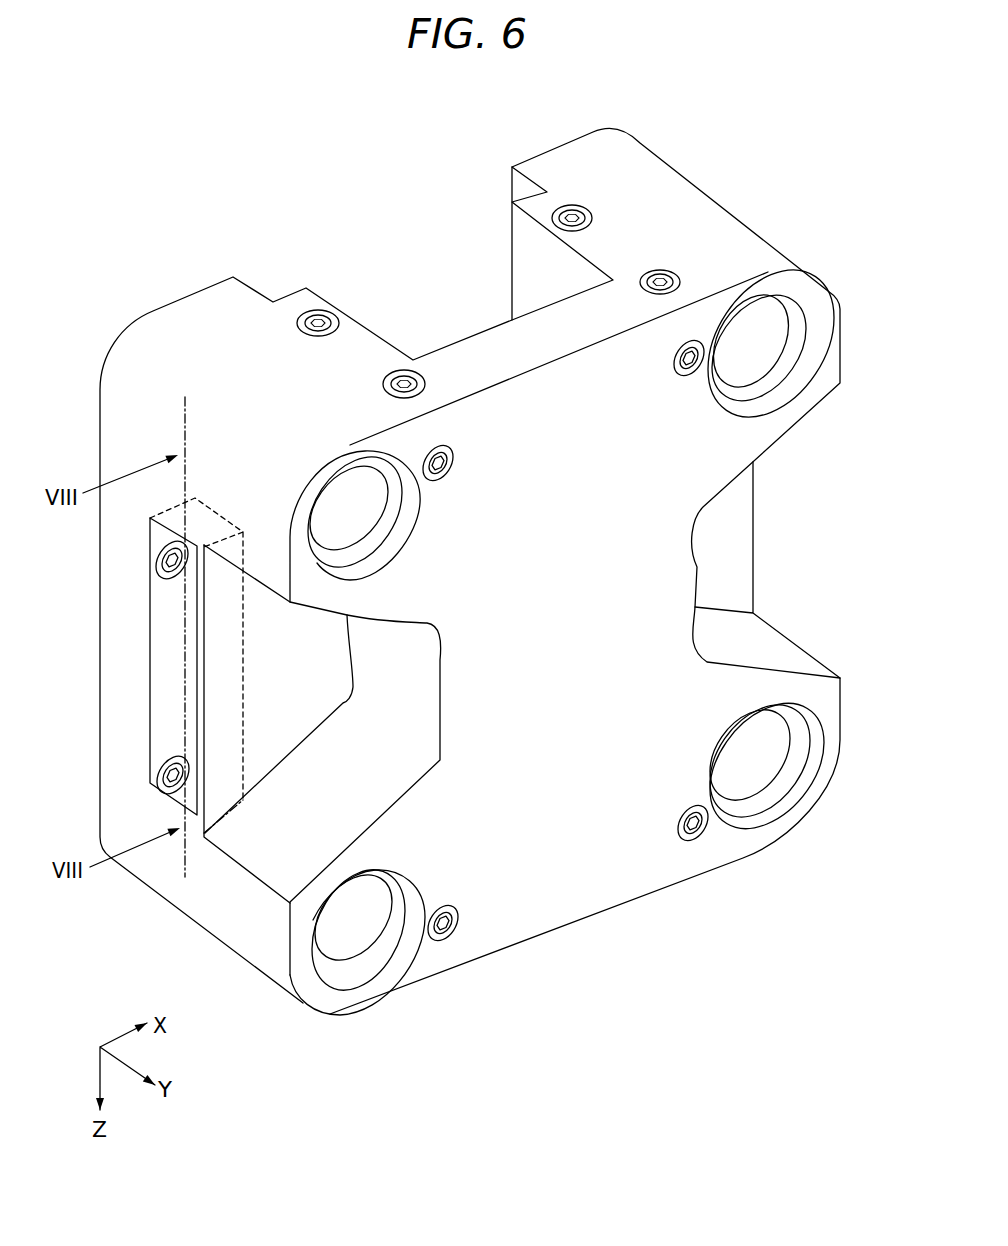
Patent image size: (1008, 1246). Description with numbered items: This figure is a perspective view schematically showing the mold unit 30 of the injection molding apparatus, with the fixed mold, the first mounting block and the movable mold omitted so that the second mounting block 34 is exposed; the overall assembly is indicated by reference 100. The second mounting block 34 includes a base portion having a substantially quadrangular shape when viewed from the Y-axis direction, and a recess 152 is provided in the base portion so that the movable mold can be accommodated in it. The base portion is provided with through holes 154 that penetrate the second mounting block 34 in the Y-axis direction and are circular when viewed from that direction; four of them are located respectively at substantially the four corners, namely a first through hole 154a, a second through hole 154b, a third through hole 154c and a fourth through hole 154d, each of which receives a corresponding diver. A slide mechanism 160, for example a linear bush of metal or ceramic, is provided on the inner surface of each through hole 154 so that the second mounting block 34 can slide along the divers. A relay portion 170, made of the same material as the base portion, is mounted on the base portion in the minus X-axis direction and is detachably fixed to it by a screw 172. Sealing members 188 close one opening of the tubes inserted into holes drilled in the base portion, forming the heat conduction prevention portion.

The lens unit / optical assembly 100 is at (461, 583).
The mold unit 30 is at (686, 138).
The second mounting block 34 is at (131, 281).
The recess 152 is at (392, 343).
The through holes 154 is at (511, 623).
The first through hole 154a is at (332, 487).
The second through hole 154b is at (338, 893).
The third through hole 154c is at (737, 727).
The fourth through hole 154d is at (742, 317).
The slide mechanism 160 is at (758, 385).
The relay portion 170 is at (173, 677).
The screw 172 is at (153, 577).
The sealing member 188 is at (412, 372).